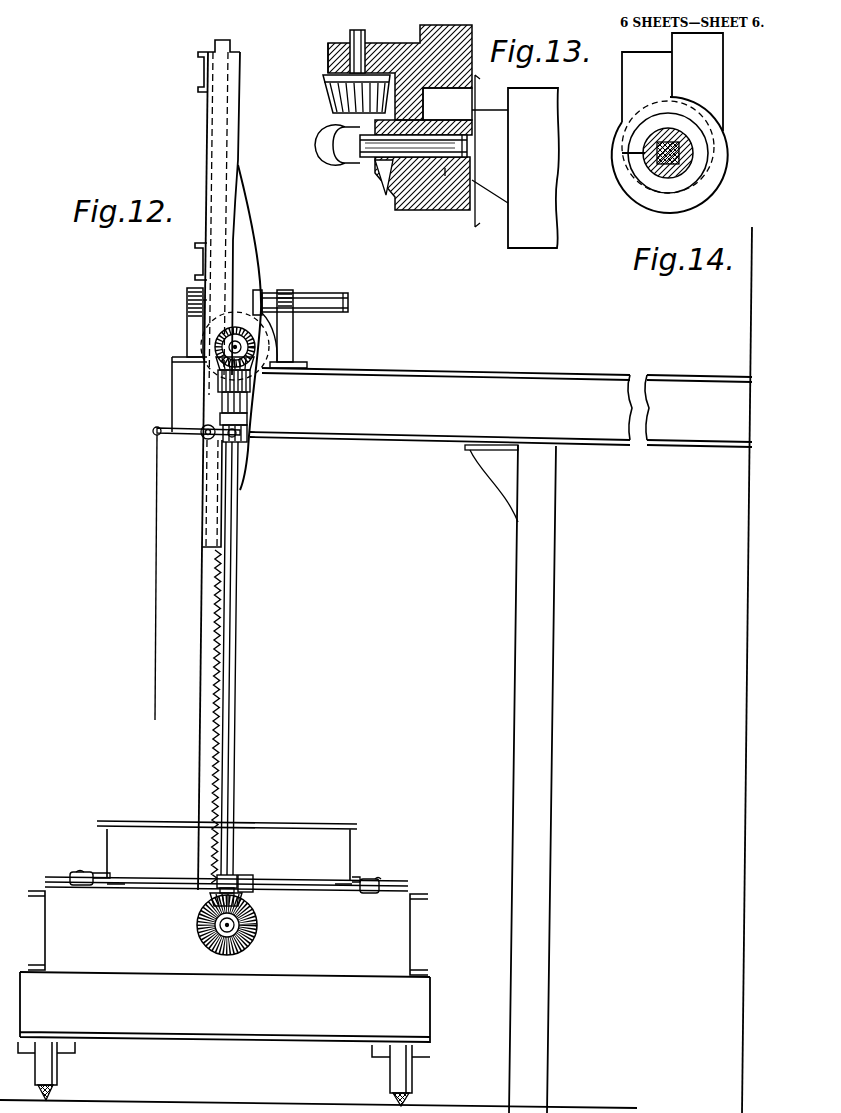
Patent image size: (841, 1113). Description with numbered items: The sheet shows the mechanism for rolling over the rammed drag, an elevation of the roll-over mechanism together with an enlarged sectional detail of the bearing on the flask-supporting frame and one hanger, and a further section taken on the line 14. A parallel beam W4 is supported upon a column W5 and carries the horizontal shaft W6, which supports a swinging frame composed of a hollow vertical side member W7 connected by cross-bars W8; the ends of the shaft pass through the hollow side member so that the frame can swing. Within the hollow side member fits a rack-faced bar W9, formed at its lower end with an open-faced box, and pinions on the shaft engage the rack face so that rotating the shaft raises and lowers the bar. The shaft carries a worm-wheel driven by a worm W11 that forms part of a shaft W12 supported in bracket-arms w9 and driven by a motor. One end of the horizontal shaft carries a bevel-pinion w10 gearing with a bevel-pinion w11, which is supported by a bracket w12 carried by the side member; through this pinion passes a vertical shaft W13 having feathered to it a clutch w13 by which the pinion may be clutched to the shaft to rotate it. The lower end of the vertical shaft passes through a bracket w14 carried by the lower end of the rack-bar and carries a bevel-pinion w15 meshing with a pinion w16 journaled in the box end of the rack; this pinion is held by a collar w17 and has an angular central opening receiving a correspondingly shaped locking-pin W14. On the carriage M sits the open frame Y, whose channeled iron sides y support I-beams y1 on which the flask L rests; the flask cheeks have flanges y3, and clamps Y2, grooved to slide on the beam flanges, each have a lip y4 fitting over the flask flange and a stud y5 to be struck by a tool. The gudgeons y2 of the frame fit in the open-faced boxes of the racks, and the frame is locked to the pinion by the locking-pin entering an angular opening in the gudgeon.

In FIG. 12, the parallel beam W4 is at (501, 445).
In FIG. 12, the column W5 is at (543, 779).
In FIG. 12, the horizontal shaft W6 is at (222, 347).
In FIG. 12, the hollow vertical side member W7 is at (240, 93).
In FIG. 12, the cross-bar W8 is at (198, 76).
In FIG. 12, the rack-faced bar W9 is at (210, 705).
In FIG. 14, the rack-faced bar W9 is at (708, 68).
In FIG. 12, the bracket-arm w9 is at (199, 312).
In FIG. 12, the bevel-pinion w10 is at (216, 338).
In FIG. 12, the worm W11 is at (262, 290).
In FIG. 12, the bevel-pinion w11 is at (215, 370).
In FIG. 12, the shaft W12 is at (332, 295).
In FIG. 12, the bracket w12 is at (232, 376).
In FIG. 12, the vertical shaft W13 is at (235, 599).
In FIG. 13, the vertical shaft W13 is at (348, 43).
In FIG. 12, the clutch w13 is at (250, 421).
In FIG. 12, the locking-pin W14 is at (248, 926).
In FIG. 13, the locking-pin W14 is at (391, 145).
In FIG. 14, the locking-pin W14 is at (647, 173).
In FIG. 12, the bracket w14 is at (240, 877).
In FIG. 13, the bracket w14 is at (328, 58).
In FIG. 12, the bevel-pinion w15 is at (212, 898).
In FIG. 13, the bevel-pinion w15 is at (324, 93).
In FIG. 12, the pinion w16 is at (198, 934).
In FIG. 13, the pinion w16 is at (476, 98).
In FIG. 14, the pinion w16 is at (729, 172).
In FIG. 13, the collar w17 is at (421, 116).
In FIG. 14, the collar w17 is at (690, 127).
In FIG. 12, the channeled iron side y is at (40, 927).
In FIG. 12, the I-beam y1 is at (61, 877).
In FIG. 12, the clamp Y2 is at (85, 872).
In FIG. 13, the gudgeon y2 is at (445, 168).
In FIG. 14, the gudgeon y2 is at (682, 175).
In FIG. 12, the flange y3 is at (115, 886).
In FIG. 12, the lip y4 is at (108, 873).
In FIG. 12, the stud y5 is at (78, 872).
In FIG. 12, the open frame Y is at (225, 954).
In FIG. 13, the open frame Y is at (540, 190).
In FIG. 12, the flask L is at (227, 850).
In FIG. 12, the carriage M is at (224, 1039).
In FIG. 13, the section line 14 is at (482, 154).